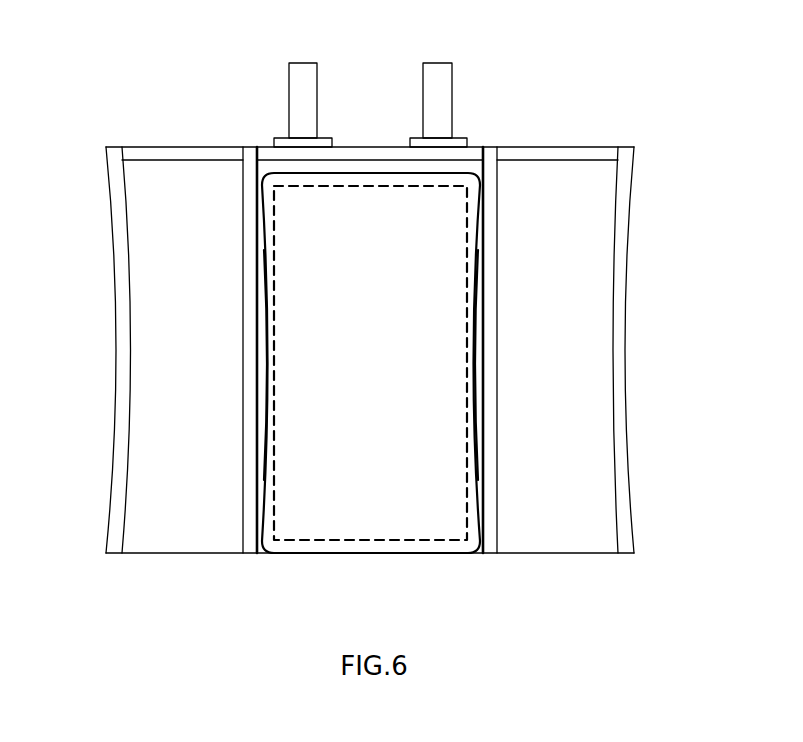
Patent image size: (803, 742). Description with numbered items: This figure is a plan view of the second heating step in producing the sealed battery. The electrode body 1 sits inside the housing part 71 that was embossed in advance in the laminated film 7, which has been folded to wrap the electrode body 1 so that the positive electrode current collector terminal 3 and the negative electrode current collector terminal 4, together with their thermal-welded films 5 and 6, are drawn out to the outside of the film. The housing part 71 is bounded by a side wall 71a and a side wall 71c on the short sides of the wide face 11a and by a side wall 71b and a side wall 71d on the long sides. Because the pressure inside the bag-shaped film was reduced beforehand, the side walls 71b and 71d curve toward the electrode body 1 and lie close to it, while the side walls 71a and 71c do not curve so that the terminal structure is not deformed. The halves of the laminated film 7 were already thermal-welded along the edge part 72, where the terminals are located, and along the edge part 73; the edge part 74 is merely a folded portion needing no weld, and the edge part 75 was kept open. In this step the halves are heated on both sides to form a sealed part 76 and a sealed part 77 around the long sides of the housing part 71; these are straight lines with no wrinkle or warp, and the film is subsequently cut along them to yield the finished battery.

The electrode body 1 is at (418, 277).
The positive electrode current collector terminal 3 is at (445, 61).
The negative electrode current collector terminal 4 is at (311, 61).
The thermal-welded film 5 is at (464, 137).
The thermal-welded film 6 is at (277, 137).
The laminated film 7 is at (130, 144).
The wide face 11a is at (328, 483).
The housing part 71 is at (484, 503).
The side wall 71a is at (359, 172).
The side wall 71b is at (267, 370).
The side wall 71c is at (383, 555).
The side wall 71d is at (473, 372).
The edge part 72 is at (604, 146).
The edge part 73 is at (108, 216).
The edge part 74 is at (137, 555).
The edge part 75 is at (633, 208).
The sealed part 76 is at (250, 555).
The sealed part 77 is at (490, 555).